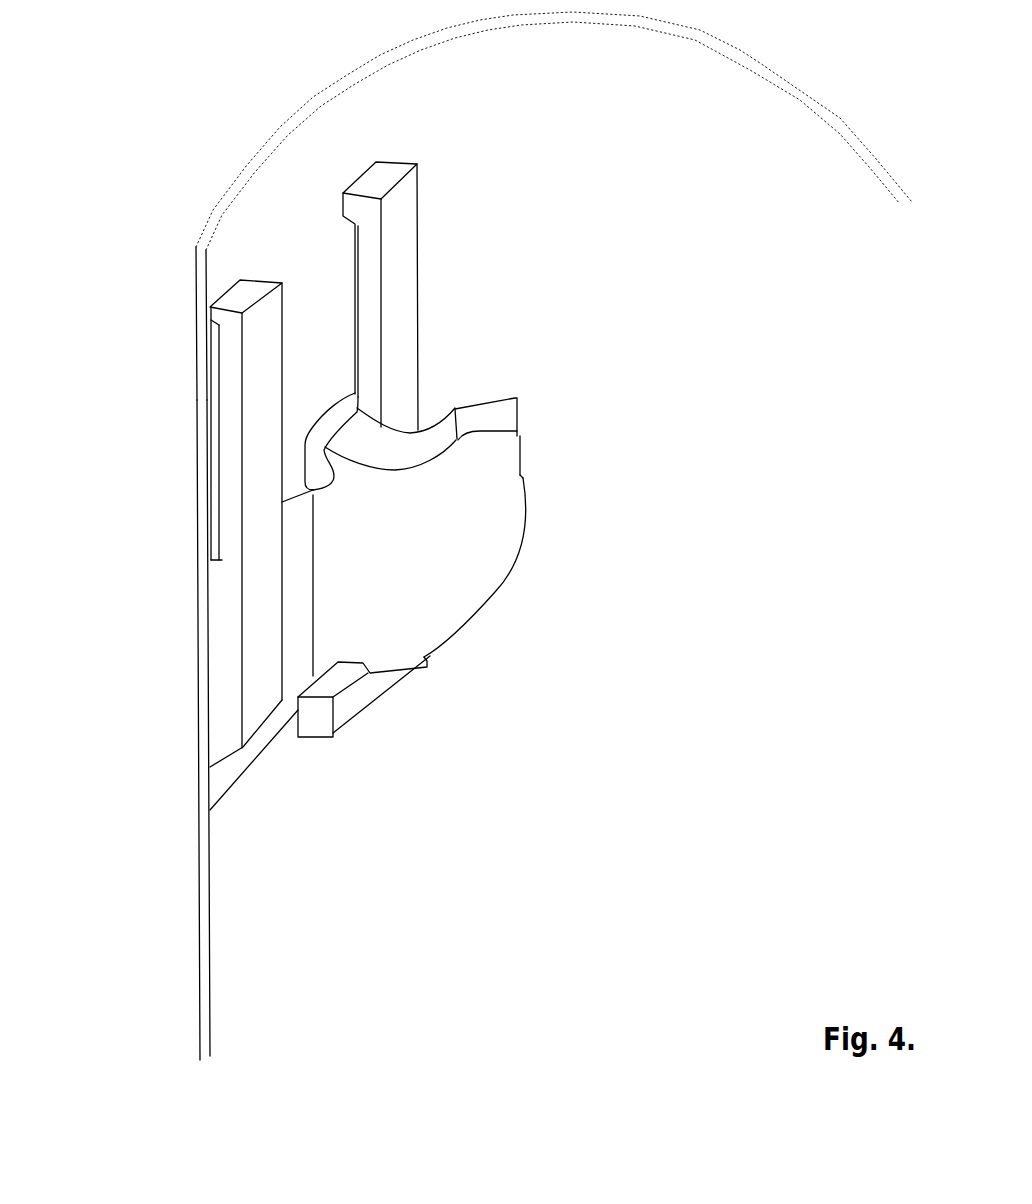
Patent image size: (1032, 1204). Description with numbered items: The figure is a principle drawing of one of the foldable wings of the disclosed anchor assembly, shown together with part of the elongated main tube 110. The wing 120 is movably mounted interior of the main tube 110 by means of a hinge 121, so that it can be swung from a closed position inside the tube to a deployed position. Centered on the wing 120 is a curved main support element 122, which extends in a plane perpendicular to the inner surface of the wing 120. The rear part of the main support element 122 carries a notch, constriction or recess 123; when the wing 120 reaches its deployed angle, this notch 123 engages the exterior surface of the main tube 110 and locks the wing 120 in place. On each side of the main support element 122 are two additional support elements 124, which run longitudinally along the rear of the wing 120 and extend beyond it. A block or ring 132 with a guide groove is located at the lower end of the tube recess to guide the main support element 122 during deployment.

The elongated main tube 110 is at (202, 285).
The foldable wing 120 is at (207, 662).
The hinge 121 is at (340, 418).
The main support element 122 is at (462, 588).
The notch, constriction or recess 123 is at (522, 452).
The additional support element 124 is at (398, 238).
The block or ring 132 is at (352, 698).